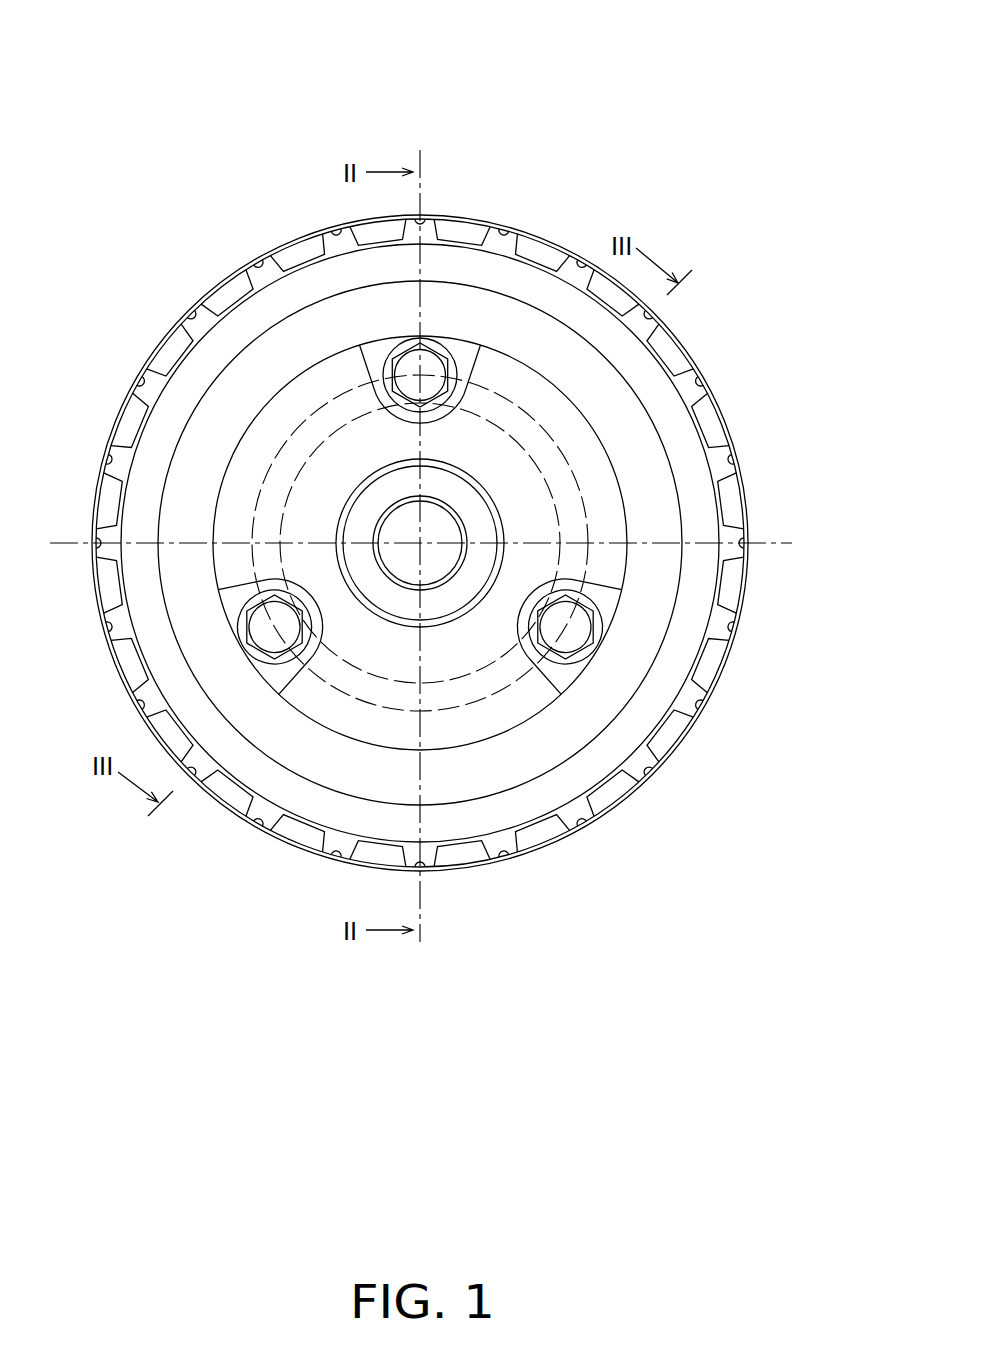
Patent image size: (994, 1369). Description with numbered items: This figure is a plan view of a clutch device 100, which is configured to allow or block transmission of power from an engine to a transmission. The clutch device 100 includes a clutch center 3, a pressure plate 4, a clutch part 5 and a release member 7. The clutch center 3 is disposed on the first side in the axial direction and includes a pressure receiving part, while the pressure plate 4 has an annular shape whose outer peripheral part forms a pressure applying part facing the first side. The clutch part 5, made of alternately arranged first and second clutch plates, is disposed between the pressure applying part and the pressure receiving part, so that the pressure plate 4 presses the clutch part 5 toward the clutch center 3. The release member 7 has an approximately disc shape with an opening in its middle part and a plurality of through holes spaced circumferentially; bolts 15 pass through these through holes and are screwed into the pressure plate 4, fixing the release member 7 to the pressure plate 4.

The clutch device 100 is at (600, 113).
The clutch center 3 is at (685, 430).
The pressure plate 4 is at (735, 583).
The clutch part 5 is at (737, 454).
The release member 7 is at (563, 422).
The bolt 15 is at (575, 635).